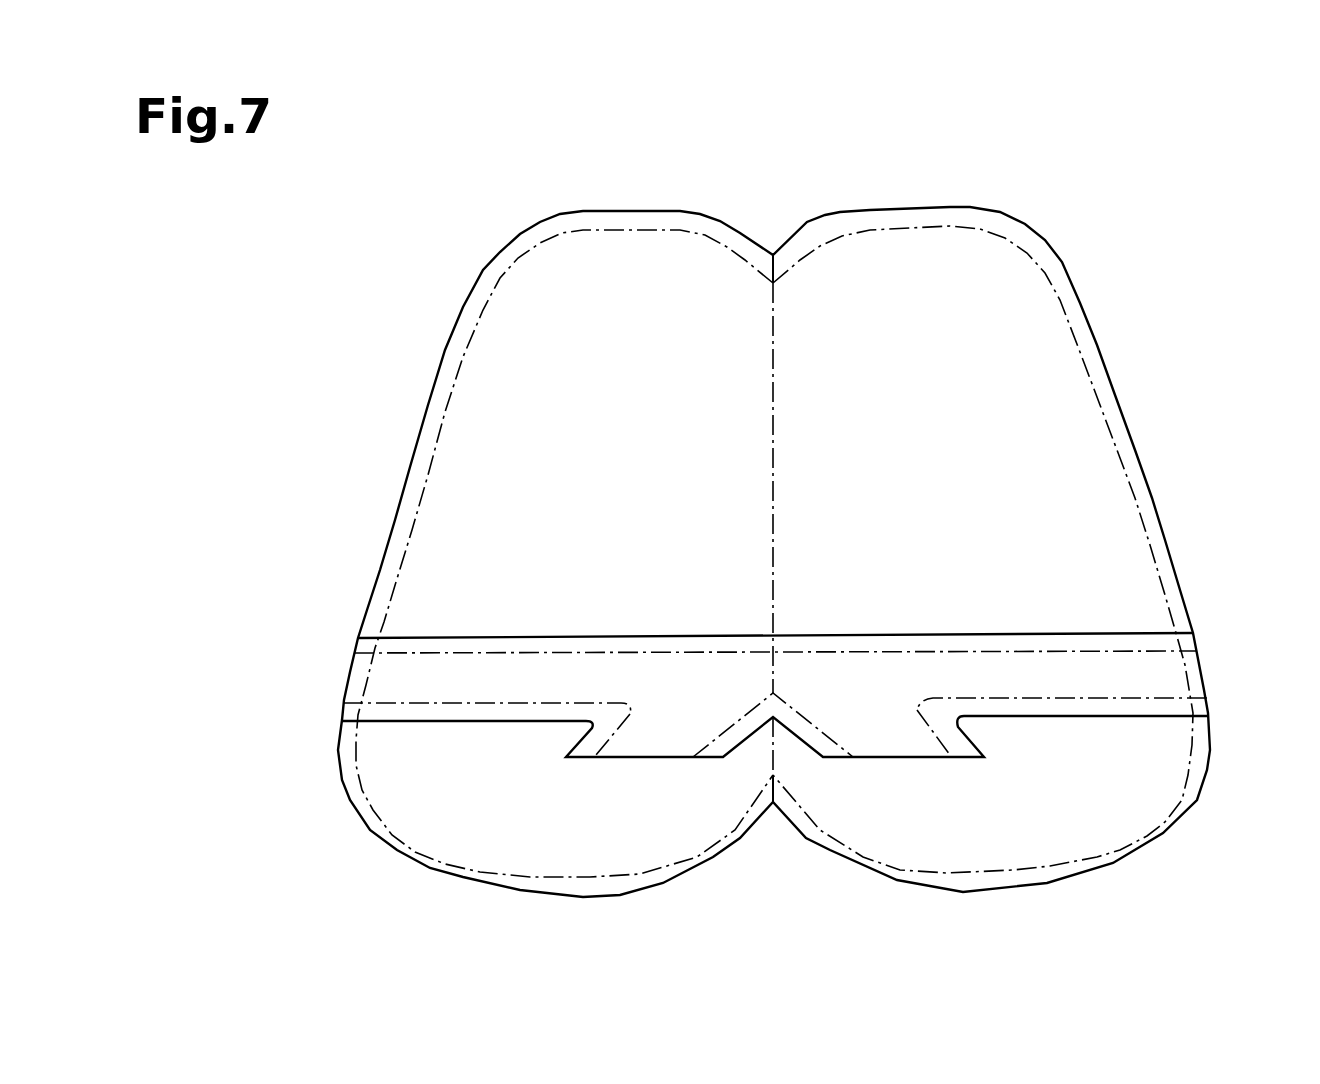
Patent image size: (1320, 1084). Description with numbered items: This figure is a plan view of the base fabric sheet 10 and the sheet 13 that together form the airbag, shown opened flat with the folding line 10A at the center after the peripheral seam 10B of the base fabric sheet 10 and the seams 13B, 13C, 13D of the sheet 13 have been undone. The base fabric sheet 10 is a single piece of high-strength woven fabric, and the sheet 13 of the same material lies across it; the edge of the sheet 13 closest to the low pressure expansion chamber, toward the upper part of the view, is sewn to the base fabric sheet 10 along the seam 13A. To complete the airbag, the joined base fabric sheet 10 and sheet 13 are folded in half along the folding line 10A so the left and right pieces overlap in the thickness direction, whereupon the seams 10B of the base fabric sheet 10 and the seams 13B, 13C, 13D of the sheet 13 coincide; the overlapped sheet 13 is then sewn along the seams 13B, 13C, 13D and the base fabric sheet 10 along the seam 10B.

The base fabric sheet 10 is at (1131, 303).
The folding line 10A is at (773, 441).
The seam 10B is at (424, 471).
The sheet 13 is at (970, 633).
The seam 13A is at (692, 652).
The seam 13B is at (733, 724).
The seam 13C is at (478, 703).
The seam 13D is at (601, 745).